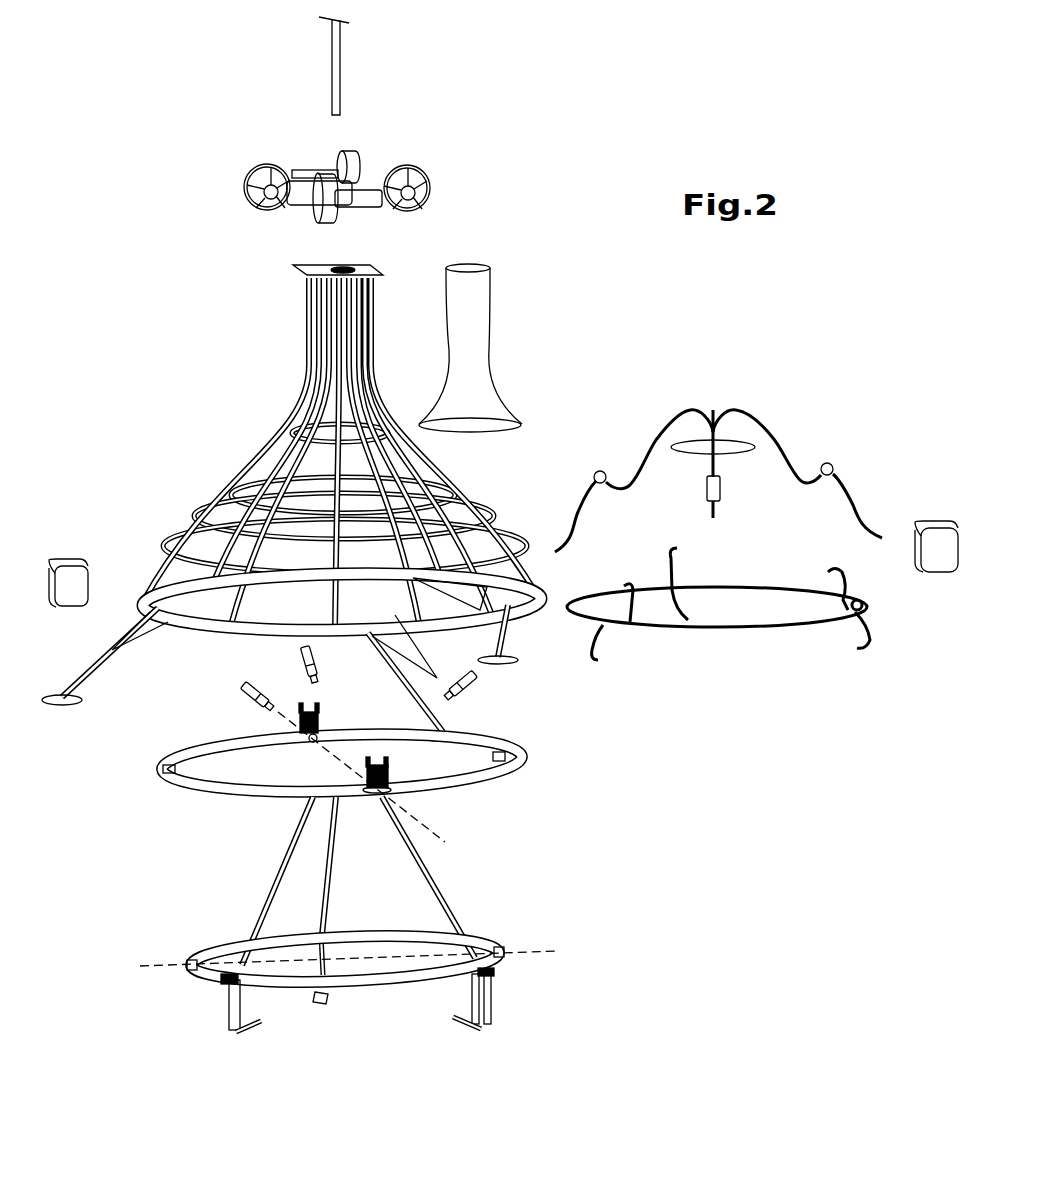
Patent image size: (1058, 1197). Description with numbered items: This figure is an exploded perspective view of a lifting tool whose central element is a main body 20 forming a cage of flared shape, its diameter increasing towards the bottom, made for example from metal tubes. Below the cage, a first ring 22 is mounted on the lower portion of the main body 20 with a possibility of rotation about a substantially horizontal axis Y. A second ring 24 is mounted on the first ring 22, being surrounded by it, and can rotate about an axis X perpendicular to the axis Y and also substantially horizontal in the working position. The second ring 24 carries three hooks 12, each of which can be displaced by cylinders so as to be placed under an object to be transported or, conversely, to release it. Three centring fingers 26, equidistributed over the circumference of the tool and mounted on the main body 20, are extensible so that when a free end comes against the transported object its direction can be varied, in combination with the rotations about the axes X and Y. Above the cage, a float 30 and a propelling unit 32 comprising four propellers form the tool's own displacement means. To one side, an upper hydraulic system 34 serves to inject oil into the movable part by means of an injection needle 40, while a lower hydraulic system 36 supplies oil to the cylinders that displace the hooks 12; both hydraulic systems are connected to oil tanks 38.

The hook 12 is at (232, 1025).
The main body 20 is at (310, 311).
The first ring 22 is at (507, 770).
The second ring 24 is at (228, 946).
The centring finger 26 is at (300, 652).
The float 30 is at (475, 326).
The propelling unit 32 is at (462, 178).
The upper hydraulic system 34 is at (745, 413).
The lower hydraulic system 36 is at (772, 622).
The oil tank 38 is at (62, 558).
The injection needle 40 is at (720, 487).